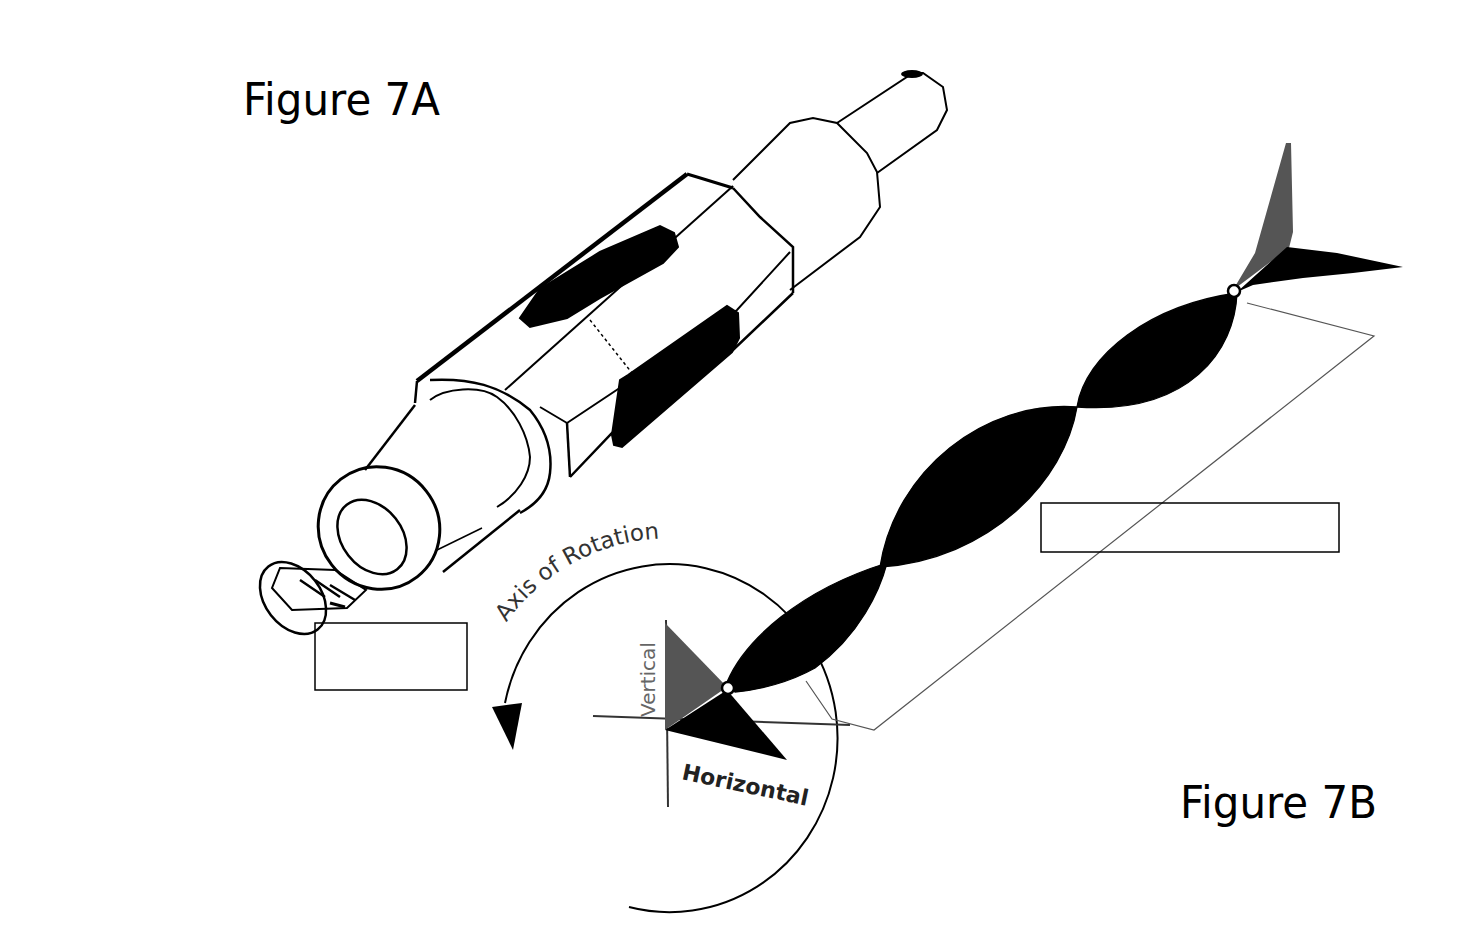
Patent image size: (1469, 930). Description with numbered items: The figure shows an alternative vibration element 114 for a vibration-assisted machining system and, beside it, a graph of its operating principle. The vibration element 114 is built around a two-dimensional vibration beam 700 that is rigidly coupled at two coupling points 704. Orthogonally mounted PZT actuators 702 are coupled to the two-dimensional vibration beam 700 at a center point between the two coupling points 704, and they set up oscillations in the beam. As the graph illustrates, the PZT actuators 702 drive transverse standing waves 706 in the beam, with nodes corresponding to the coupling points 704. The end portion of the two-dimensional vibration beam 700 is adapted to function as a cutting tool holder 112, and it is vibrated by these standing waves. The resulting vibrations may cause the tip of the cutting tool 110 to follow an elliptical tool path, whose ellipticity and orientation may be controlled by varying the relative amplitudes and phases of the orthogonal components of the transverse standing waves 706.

In FIG. 7A, the vibration element 114 is at (646, 69).
In FIG. 7A, the two-dimensional vibration beam 700 is at (430, 374).
In FIG. 7A, the PZT actuators 702 is at (585, 277).
In FIG. 7A, the coupling points 704 is at (337, 477).
In FIG. 7B, the coupling points 704 is at (1190, 527).
In FIG. 7B, the transverse standing waves 706 is at (1150, 318).
In FIG. 7A, the cutting tool holder 112 is at (262, 577).
In FIG. 7A, the cutting tool 110 is at (326, 618).